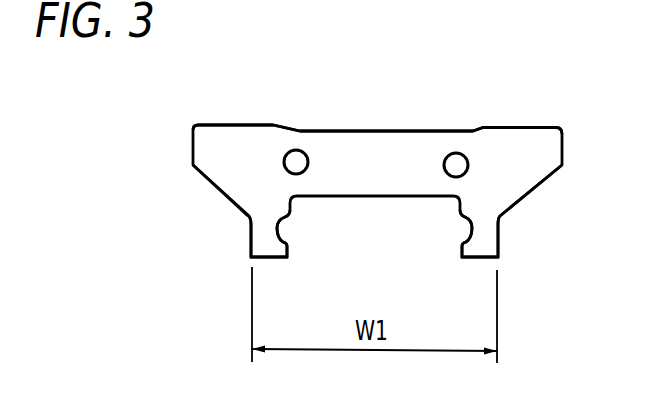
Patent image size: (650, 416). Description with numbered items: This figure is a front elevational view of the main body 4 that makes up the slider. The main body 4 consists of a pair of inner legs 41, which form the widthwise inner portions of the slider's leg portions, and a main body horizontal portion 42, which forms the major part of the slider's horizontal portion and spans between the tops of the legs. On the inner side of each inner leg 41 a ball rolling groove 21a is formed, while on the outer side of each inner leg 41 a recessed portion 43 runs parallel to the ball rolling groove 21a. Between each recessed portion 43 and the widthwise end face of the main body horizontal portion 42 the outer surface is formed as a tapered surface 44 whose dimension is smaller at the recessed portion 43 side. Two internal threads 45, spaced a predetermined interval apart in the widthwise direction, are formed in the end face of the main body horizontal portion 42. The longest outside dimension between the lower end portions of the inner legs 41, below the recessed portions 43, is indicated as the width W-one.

The main body 4 is at (492, 122).
The main body horizontal portion 42 is at (409, 142).
The internal threads 45 is at (300, 149).
The tapered surface 44 is at (215, 192).
The recessed portion 43 is at (245, 226).
The inner legs 41 is at (268, 257).
The ball rolling groove 21a is at (280, 232).